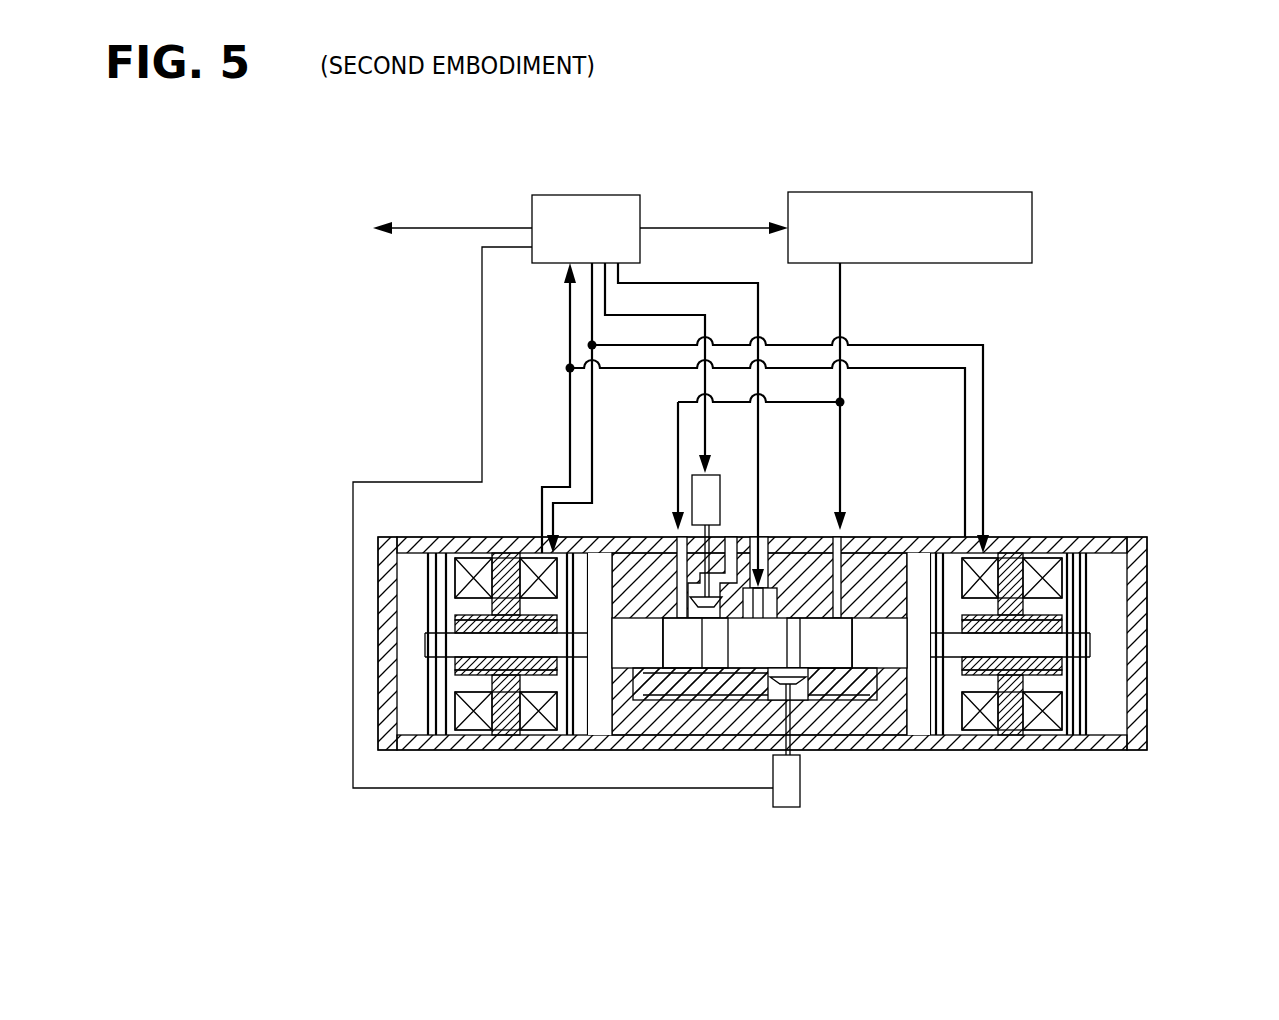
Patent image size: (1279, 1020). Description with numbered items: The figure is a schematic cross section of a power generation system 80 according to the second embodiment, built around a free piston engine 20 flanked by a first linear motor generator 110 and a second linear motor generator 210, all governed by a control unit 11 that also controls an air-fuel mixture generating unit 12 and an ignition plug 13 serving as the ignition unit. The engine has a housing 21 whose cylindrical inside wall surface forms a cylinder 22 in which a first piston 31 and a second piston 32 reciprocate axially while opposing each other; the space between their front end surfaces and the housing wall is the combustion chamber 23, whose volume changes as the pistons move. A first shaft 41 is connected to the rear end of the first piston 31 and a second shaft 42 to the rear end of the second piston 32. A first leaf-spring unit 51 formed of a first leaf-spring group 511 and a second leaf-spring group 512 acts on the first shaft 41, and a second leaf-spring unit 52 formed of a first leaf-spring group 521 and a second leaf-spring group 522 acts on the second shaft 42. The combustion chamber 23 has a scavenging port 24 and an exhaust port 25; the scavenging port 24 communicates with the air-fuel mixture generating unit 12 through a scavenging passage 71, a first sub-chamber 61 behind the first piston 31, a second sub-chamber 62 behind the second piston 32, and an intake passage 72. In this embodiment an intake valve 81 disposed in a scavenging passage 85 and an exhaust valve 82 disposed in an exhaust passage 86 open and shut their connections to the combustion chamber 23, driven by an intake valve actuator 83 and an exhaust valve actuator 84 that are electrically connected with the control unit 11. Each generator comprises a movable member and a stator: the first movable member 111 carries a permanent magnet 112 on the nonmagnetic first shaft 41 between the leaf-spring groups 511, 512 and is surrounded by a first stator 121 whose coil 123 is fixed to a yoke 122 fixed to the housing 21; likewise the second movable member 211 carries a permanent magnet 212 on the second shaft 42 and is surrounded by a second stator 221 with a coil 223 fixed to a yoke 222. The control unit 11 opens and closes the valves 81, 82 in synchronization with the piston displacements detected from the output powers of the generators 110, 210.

The control unit 11 is at (557, 195).
The air-fuel mixture generating unit 12 is at (910, 192).
The ignition plug 13 is at (750, 750).
The free piston engine 20 is at (621, 775).
The housing 21 is at (376, 537).
The cylinder 22 is at (765, 750).
The combustion chamber 23 is at (737, 750).
The scavenging port 24 is at (792, 537).
The exhaust port 25 is at (710, 750).
The first piston 31 is at (687, 750).
The second piston 32 is at (840, 750).
The first shaft 41 is at (603, 750).
The second shaft 42 is at (913, 750).
The first leaf-spring unit 51 is at (404, 721).
The second leaf-spring unit 52 is at (1113, 721).
The first sub-chamber 61 is at (645, 750).
The second sub-chamber 62 is at (880, 750).
The scavenging passage 71 is at (857, 750).
The intake passage 72 is at (672, 537).
The power generation system 80 is at (1078, 334).
The intake valve 81 is at (813, 750).
The exhaust valve 82 is at (622, 537).
The intake valve actuator 83 is at (676, 440).
The exhaust valve actuator 84 is at (793, 807).
The scavenging passage 85 is at (817, 537).
The exhaust passage 86 is at (737, 537).
The first linear motor generator 110 is at (404, 577).
The first movable member 111 is at (427, 630).
The permanent magnet 112 is at (523, 537).
The first stator 121 is at (452, 607).
The yoke 122 is at (498, 537).
The coil 123 is at (458, 537).
The second linear motor generator 210 is at (1115, 562).
The second movable member 211 is at (1090, 657).
The permanent magnet 212 is at (995, 537).
The second stator 221 is at (1061, 602).
The yoke 222 is at (1023, 537).
The coil 223 is at (950, 537).
The first leaf-spring group 511 is at (420, 552).
The second leaf-spring group 512 is at (605, 537).
The first leaf-spring group 521 is at (1103, 537).
The second leaf-spring group 522 is at (910, 537).